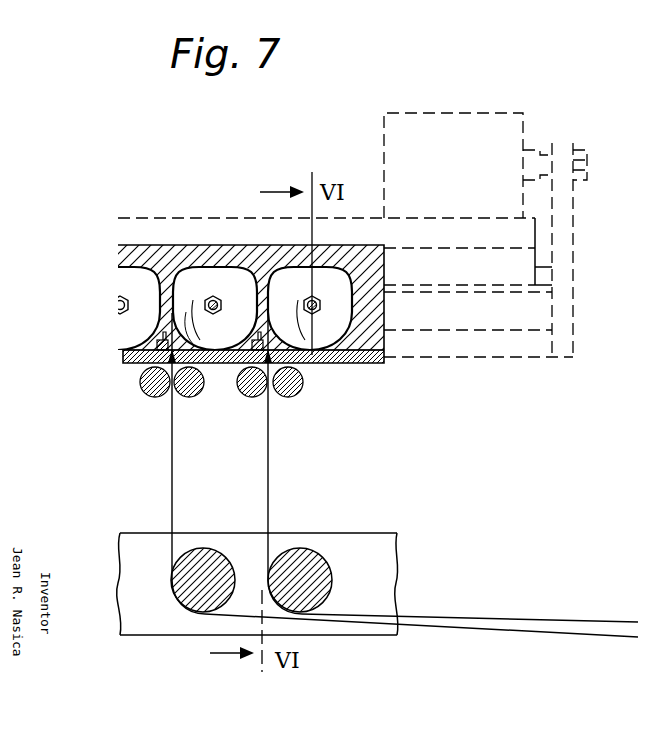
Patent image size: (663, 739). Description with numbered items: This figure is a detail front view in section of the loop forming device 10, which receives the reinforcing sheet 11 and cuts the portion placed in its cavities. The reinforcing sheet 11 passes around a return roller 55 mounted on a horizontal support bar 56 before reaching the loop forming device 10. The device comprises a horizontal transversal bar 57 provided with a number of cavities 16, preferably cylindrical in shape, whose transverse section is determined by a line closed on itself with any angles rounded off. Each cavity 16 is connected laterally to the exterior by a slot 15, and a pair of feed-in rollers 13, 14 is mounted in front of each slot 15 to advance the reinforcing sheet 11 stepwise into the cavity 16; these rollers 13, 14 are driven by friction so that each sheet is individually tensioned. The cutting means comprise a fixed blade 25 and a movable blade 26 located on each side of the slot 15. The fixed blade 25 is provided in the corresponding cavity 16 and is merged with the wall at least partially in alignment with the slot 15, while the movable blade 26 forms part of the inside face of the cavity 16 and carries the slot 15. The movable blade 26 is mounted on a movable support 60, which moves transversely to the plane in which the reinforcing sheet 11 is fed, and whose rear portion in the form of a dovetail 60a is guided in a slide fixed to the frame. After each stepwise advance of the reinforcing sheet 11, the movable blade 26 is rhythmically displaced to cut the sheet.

The loop forming device 10 is at (208, 212).
The reinforcing sheet 11 is at (580, 618).
The feed-in roller 13 is at (150, 388).
The feed-in roller 14 is at (191, 397).
The slot 15 is at (163, 346).
The cavity 16 is at (216, 294).
The fixed blade 25 is at (152, 348).
The movable blade 26 is at (197, 338).
The return roller 55 is at (207, 560).
The horizontal support bar 56 is at (131, 621).
The transversal bar 57 is at (143, 252).
The movable support 60 is at (520, 347).
The dovetail 60a is at (547, 281).